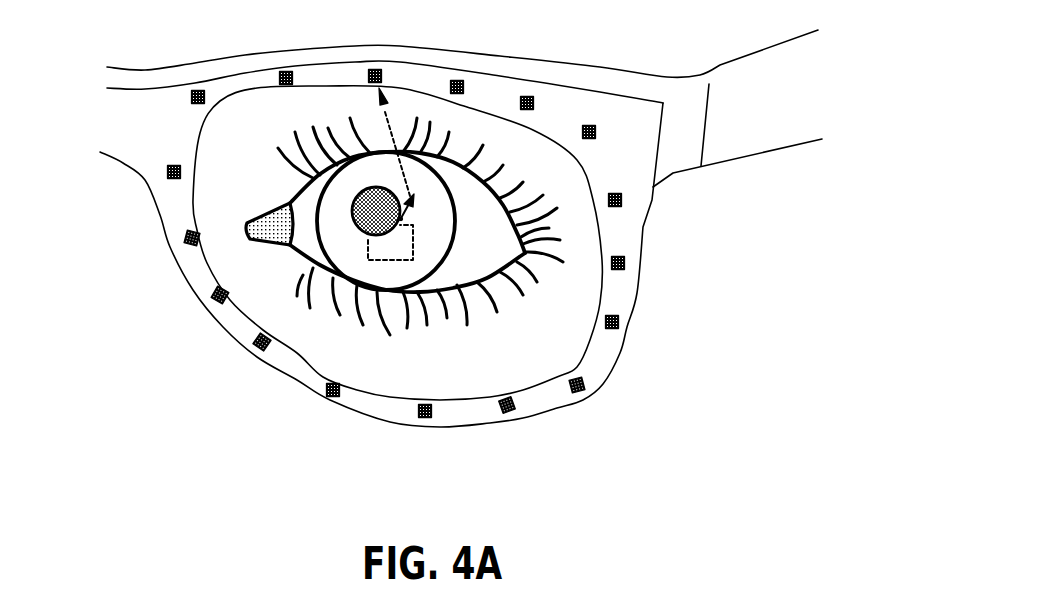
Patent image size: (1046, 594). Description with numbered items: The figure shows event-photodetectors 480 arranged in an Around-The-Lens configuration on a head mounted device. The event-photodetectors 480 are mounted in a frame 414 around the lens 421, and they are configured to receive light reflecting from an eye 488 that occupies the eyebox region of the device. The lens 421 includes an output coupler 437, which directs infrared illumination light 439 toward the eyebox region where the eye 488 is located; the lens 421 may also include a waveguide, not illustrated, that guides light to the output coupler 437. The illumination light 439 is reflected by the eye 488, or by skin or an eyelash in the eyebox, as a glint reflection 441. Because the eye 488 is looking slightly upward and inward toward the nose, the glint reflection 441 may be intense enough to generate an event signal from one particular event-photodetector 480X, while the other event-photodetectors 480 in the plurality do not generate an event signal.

The frame 414 is at (150, 138).
The lens 421 is at (533, 363).
The output coupler 437 is at (413, 247).
The infrared illumination light 439 is at (403, 219).
The glint reflection 441 is at (386, 110).
The event-photodetectors 480 is at (198, 97).
The event-photodetector 480X is at (375, 76).
The eye 488 is at (270, 182).